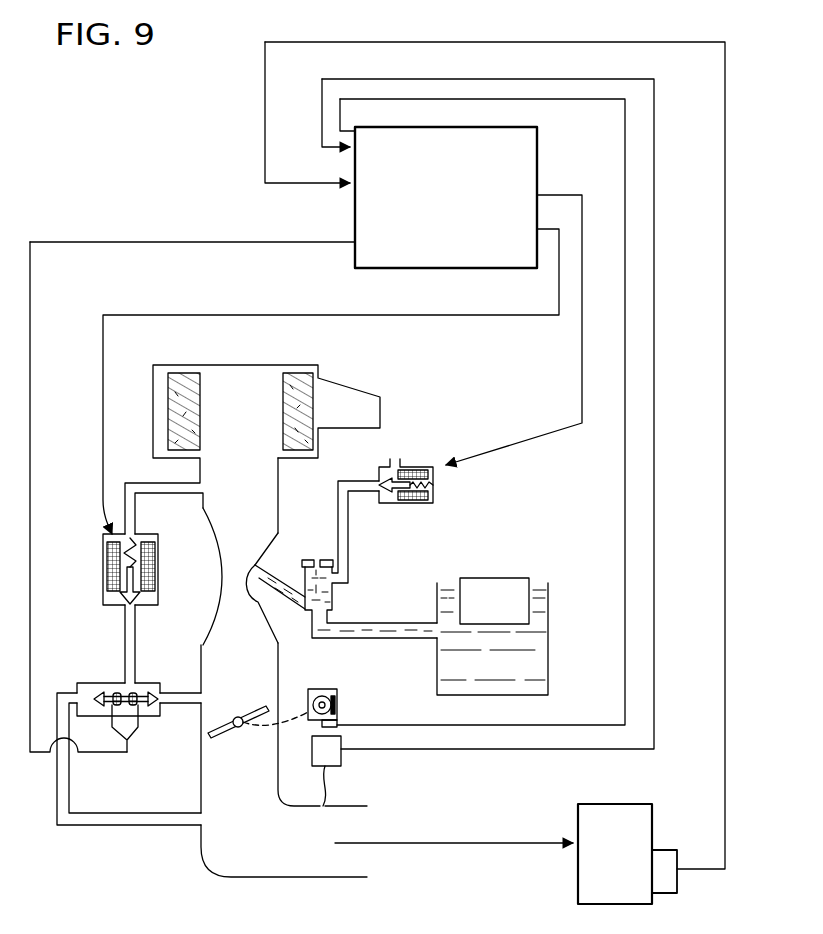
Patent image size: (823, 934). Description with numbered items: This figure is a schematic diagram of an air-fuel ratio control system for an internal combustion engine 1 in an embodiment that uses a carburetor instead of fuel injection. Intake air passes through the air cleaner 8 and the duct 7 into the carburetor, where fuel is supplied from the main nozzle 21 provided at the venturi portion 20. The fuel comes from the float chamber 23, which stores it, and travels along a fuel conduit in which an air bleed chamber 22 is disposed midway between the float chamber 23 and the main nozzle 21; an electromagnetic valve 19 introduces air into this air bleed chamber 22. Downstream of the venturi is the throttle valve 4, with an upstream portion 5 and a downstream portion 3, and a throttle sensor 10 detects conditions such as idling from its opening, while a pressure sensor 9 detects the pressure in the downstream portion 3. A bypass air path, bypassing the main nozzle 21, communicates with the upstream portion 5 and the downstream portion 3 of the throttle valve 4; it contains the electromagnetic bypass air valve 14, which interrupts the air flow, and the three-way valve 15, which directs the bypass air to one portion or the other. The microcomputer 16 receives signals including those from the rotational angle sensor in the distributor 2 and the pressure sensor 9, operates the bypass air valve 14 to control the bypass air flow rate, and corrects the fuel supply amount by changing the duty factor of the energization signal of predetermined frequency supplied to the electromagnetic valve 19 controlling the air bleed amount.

The internal combustion engine 1 is at (625, 804).
The distributor 2 is at (665, 850).
The downstream portion of the throttle valve 3 is at (242, 864).
The throttle valve 4 is at (242, 717).
The upstream portion of the throttle valve 5 is at (277, 661).
The duct 7 is at (267, 481).
The air cleaner 8 is at (298, 374).
The pressure sensor 9 is at (341, 760).
The throttle sensor 10 is at (337, 689).
The electromagnetic bypass air valve 14 is at (107, 587).
The three-way valve 15 is at (84, 682).
The microcomputer 16 is at (537, 155).
The electromagnetic valve 19 is at (433, 487).
The venturi portion 20 is at (265, 533).
The main nozzle 21 is at (257, 597).
The air bleed chamber 22 is at (307, 562).
The float chamber 23 is at (548, 658).